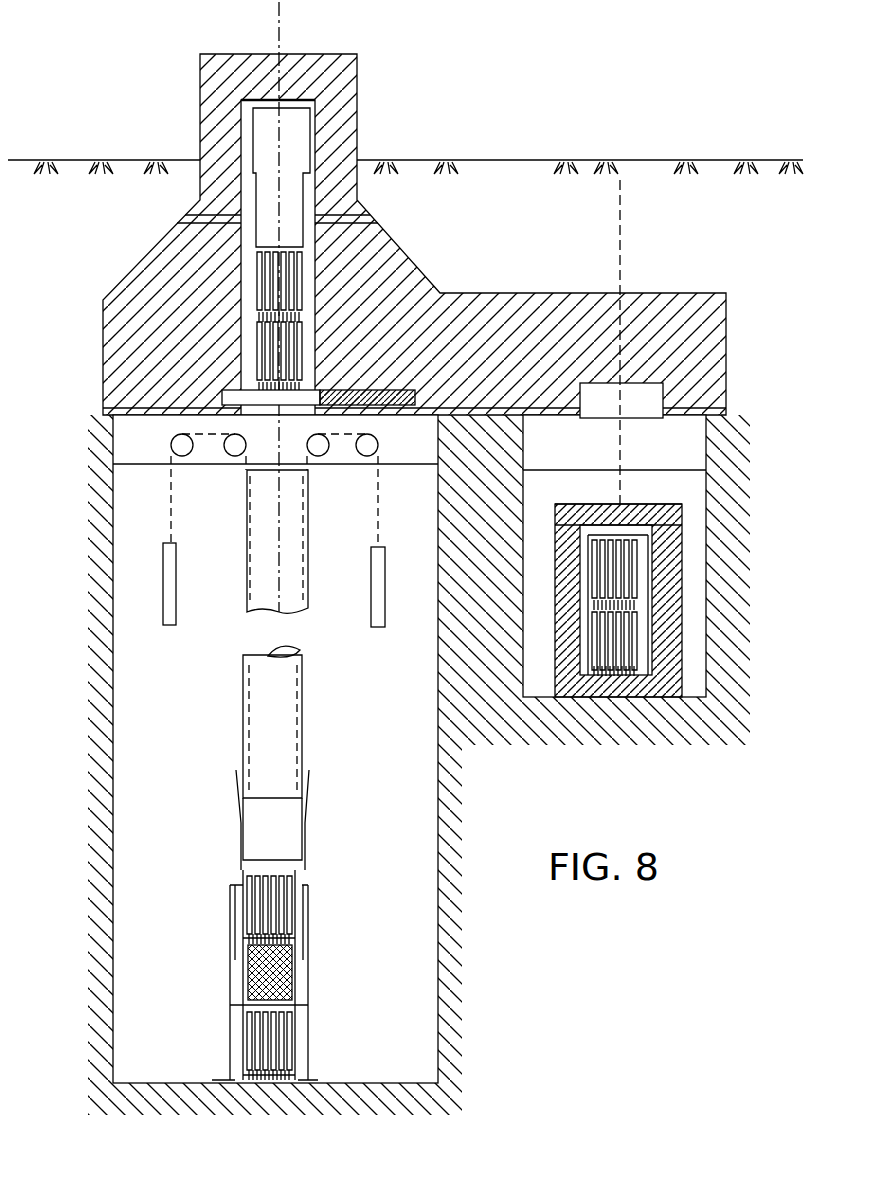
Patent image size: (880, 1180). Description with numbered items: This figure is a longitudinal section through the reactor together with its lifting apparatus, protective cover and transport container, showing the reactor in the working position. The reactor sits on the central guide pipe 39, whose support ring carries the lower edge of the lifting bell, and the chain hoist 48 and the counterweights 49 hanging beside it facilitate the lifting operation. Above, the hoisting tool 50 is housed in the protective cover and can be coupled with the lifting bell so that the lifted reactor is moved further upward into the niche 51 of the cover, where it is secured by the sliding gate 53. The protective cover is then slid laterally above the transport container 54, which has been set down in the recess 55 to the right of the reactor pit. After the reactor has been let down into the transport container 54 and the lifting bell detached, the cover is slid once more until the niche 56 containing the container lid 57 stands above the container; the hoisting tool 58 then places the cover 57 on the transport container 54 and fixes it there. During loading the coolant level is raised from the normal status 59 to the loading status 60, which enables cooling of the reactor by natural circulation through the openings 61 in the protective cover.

The central guide pipe 39 is at (243, 707).
The chain hoist 48 is at (298, 747).
The counterweights 49 is at (170, 563).
The hoisting tool 50 is at (281, 48).
The niche 51 is at (308, 190).
The sliding gate 53 is at (362, 392).
The transport container 54 is at (655, 680).
The recess 55 is at (692, 680).
The niche 56 is at (636, 387).
The container lid 57 is at (638, 505).
The hoisting tool 58 is at (621, 221).
The normal status 59 is at (130, 463).
The loading status 60 is at (692, 160).
The openings 61 is at (346, 221).